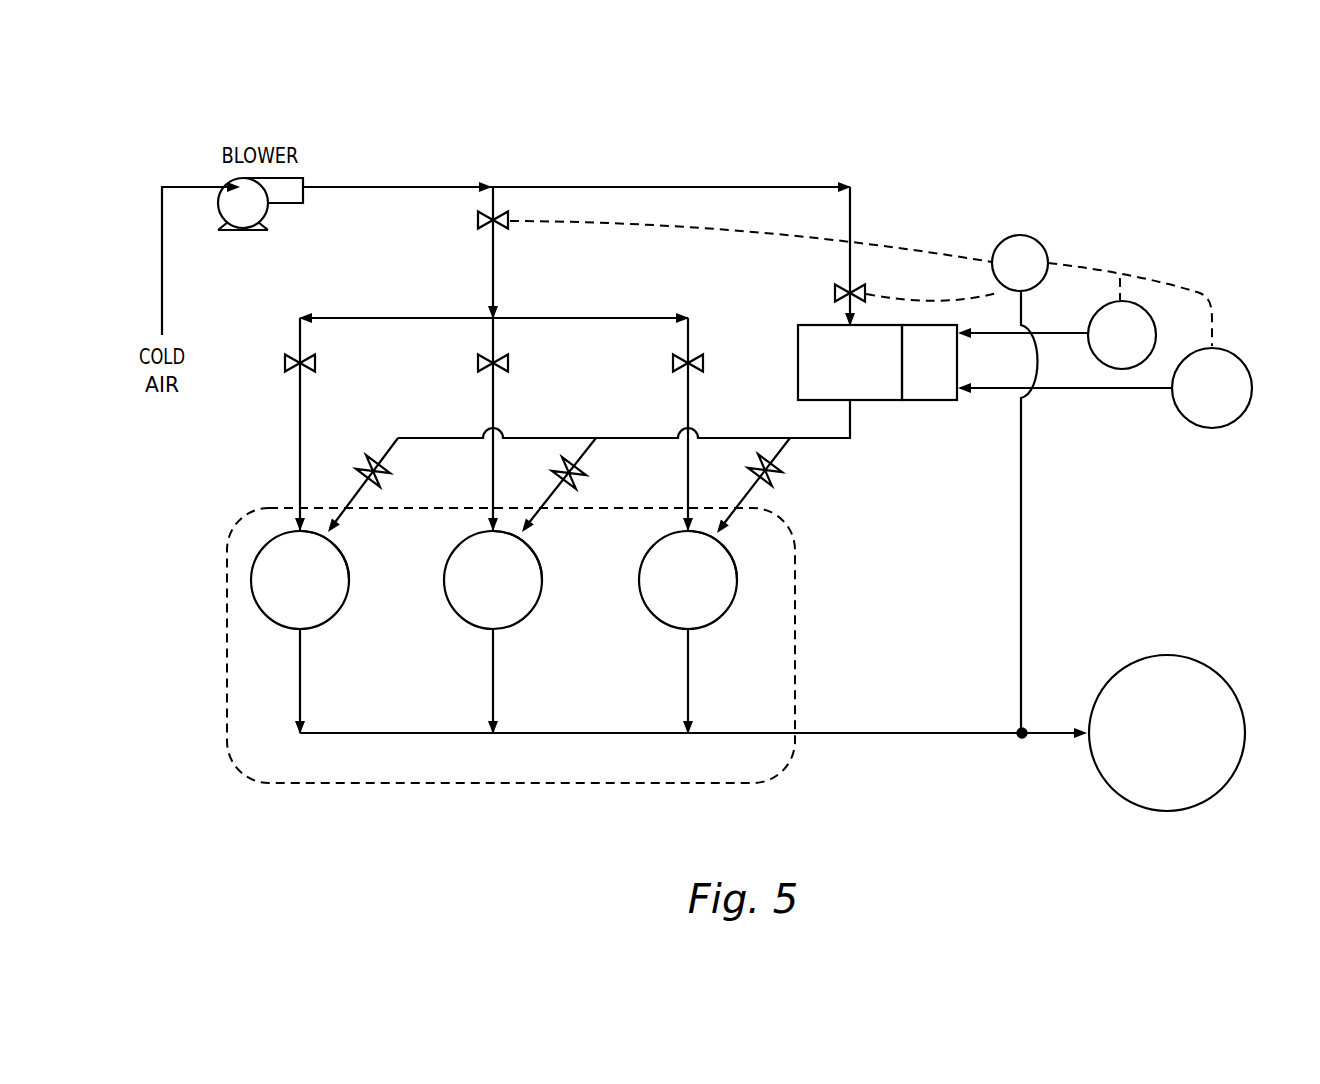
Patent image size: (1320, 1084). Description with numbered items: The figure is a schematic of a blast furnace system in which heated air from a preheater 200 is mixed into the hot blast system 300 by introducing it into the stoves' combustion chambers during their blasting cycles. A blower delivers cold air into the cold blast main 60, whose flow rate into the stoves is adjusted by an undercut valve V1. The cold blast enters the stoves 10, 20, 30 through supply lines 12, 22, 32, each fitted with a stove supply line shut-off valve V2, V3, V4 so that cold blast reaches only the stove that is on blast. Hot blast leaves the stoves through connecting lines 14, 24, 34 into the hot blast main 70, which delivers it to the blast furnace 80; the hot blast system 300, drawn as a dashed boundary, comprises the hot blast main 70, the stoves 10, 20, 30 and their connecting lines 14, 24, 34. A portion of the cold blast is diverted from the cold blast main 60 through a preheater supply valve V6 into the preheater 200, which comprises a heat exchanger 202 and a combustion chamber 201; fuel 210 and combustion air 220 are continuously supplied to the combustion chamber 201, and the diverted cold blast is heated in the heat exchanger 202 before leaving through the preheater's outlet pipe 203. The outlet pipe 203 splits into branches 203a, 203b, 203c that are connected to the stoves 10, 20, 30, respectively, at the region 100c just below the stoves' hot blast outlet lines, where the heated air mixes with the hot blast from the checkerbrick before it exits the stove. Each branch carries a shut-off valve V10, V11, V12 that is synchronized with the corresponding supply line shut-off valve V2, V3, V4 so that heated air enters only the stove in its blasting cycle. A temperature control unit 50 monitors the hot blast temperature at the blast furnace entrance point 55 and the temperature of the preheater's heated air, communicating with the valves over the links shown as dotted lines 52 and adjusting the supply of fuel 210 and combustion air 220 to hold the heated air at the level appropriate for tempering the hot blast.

The stove 10 is at (288, 594).
The stove 20 is at (481, 594).
The stove 30 is at (676, 594).
The supply line 12 is at (303, 398).
The supply line 22 is at (496, 398).
The supply line 32 is at (692, 398).
The connecting line 14 is at (303, 660).
The connecting line 24 is at (496, 660).
The connecting line 34 is at (691, 660).
The temperature control unit 50 is at (1020, 235).
The dotted lines 52 is at (880, 240).
The blast furnace entrance point 55 is at (1022, 745).
The cold blast main 60 is at (588, 186).
The hot blast main 70 is at (878, 735).
The blast furnace 80 is at (1158, 812).
The stove combustion chamber / dome 100c is at (330, 535).
The preheater 200 is at (901, 401).
The combustion chamber 201 is at (911, 376).
The heat exchanger 202 is at (832, 376).
The outlet pipe 203 is at (853, 425).
The outlet pipe branch 203a is at (393, 452).
The outlet pipe branch 203b is at (585, 449).
The outlet pipe branch 203c is at (798, 490).
The fuel 210 is at (1130, 300).
The combustion air 220 is at (1232, 350).
The hot blast system 300 is at (330, 785).
The undercut valve V1 is at (488, 215).
The stove supply line shut-off valve V2 is at (305, 358).
The stove supply line shut-off valve V3 is at (497, 358).
The stove supply line shut-off valve V4 is at (695, 355).
The preheater supply valve V6 is at (848, 290).
The shut-off valve V10 is at (388, 470).
The shut-off valve V11 is at (580, 475).
The shut-off valve V12 is at (757, 488).